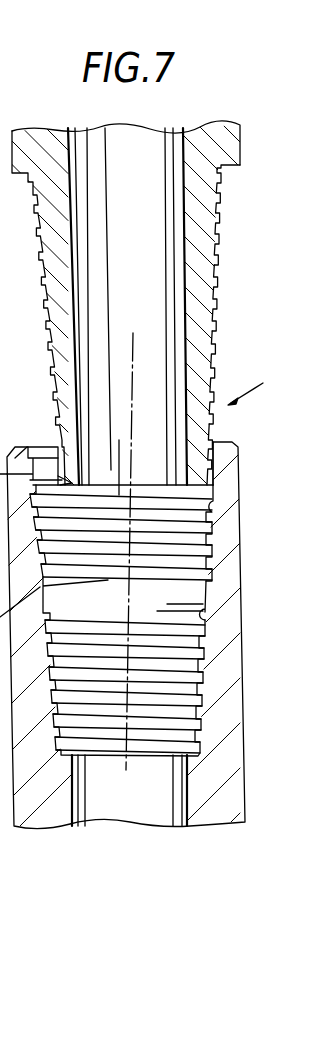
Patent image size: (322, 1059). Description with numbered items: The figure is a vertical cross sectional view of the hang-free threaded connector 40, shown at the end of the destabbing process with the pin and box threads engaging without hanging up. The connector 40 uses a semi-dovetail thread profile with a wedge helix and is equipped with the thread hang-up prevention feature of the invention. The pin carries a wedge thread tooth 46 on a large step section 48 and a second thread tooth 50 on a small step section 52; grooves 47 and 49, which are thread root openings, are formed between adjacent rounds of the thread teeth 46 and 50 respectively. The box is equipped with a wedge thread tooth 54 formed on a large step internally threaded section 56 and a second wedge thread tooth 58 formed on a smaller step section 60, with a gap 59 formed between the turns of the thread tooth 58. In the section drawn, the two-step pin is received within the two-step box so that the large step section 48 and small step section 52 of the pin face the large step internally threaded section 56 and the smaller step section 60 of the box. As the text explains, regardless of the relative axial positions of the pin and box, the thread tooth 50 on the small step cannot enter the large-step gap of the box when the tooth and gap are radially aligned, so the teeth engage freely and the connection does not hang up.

The hang-free threaded connector 40 is at (261, 383).
The wedge thread tooth 46 is at (218, 262).
The gap 47 is at (218, 228).
The large step section 48 is at (58, 190).
The gap 49 is at (207, 430).
The second thread tooth 50 is at (217, 368).
The small step section 52 is at (67, 393).
The wedge thread tooth 54 is at (213, 513).
The large step internally threaded section 56 is at (227, 560).
The second wedge thread tooth 58 is at (205, 612).
The gap 59 is at (52, 633).
The smaller step section 60 is at (230, 707).